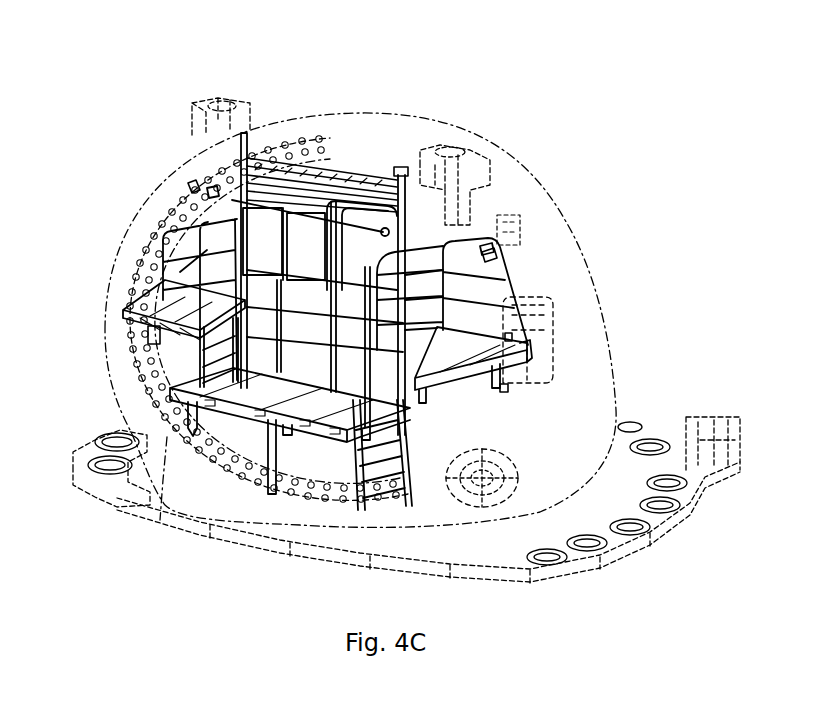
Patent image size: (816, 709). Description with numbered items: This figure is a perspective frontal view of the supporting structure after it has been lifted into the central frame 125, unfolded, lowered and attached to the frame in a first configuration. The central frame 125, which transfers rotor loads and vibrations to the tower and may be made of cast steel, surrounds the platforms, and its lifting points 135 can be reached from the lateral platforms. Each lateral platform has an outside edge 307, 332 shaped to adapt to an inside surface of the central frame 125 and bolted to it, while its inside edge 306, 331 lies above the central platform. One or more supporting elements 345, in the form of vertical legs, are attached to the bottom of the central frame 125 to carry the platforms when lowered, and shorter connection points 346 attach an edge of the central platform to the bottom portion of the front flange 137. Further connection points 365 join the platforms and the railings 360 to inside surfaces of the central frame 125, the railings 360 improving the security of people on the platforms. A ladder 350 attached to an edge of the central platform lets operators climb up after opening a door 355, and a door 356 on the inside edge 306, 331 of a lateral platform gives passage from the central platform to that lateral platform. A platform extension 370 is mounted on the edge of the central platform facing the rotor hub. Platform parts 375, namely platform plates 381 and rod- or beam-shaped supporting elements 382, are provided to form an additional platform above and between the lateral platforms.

The central frame 125 is at (600, 370).
The lifting points 135 is at (223, 108).
The front flange 137 is at (150, 203).
The inside edge 306 is at (203, 347).
The outside edge 307 is at (140, 302).
The inside edge 331 is at (427, 382).
The outside edge 332 is at (467, 378).
The supporting element 345 is at (278, 465).
The connection points 346 is at (160, 512).
The ladder 350 is at (410, 500).
The door 355 is at (447, 223).
The door 356 is at (177, 228).
The railings 360 is at (213, 193).
The connection points 365 is at (190, 187).
The platform extension 370 is at (240, 417).
The platform parts 375 is at (300, 163).
The platform plate 381 is at (378, 165).
The supporting element 382 is at (253, 158).